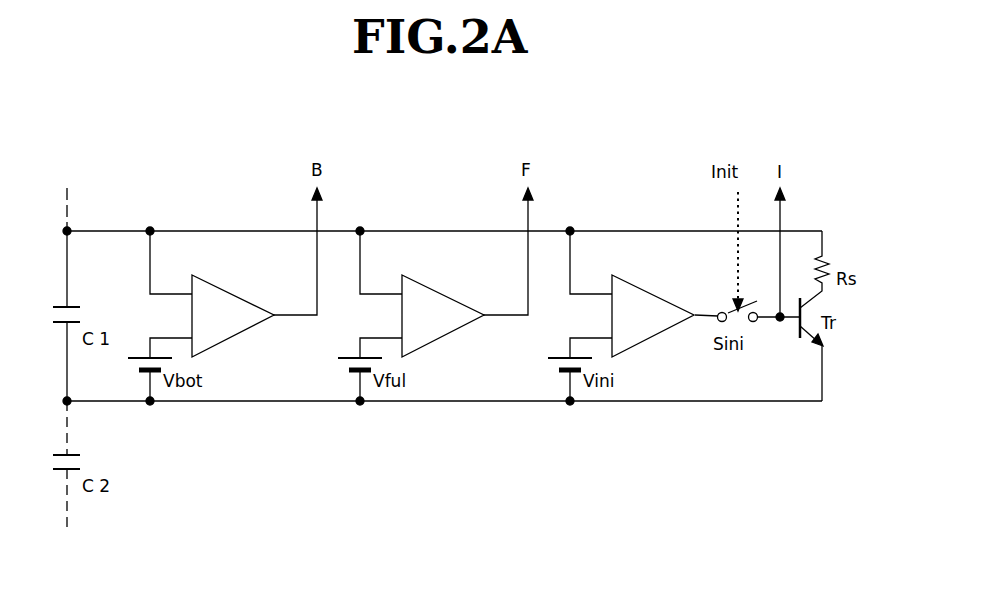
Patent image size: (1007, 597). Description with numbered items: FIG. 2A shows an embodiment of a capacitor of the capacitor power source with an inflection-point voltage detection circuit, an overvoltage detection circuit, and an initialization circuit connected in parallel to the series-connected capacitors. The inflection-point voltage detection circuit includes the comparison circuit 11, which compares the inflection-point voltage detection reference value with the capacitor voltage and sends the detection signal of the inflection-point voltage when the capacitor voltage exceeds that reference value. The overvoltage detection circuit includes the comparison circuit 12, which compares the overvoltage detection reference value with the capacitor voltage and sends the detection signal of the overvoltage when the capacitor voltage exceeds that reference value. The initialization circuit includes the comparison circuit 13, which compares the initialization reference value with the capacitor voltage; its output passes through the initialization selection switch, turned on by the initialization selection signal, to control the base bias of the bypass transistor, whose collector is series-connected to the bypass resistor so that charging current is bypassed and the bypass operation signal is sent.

The comparison circuit 11 is at (237, 295).
The comparison circuit 12 is at (447, 295).
The comparison circuit 13 is at (657, 295).